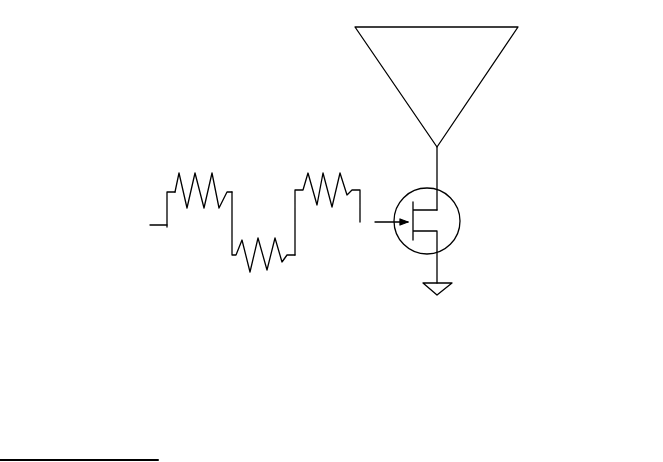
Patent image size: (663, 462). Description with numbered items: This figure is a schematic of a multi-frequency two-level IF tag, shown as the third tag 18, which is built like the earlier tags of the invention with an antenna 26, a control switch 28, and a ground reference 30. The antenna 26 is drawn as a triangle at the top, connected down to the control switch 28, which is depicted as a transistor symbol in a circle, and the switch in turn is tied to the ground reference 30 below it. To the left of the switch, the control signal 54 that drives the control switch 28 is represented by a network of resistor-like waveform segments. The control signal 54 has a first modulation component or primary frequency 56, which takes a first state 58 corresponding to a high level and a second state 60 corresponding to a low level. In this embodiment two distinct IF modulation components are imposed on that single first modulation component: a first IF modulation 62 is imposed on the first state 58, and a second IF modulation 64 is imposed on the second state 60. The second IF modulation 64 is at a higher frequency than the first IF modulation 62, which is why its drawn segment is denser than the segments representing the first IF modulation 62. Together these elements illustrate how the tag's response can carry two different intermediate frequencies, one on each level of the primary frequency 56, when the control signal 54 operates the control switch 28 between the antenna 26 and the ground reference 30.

The third tag 18 is at (183, 92).
The control signal 54 is at (128, 145).
The primary frequency 56 is at (166, 207).
The first state 58 is at (232, 193).
The second state 60 is at (163, 228).
The first IF modulation 62 is at (200, 177).
The second IF modulation 64 is at (273, 285).
The antenna 26 is at (478, 88).
The control switch 28 is at (458, 190).
The ground reference 30 is at (450, 292).